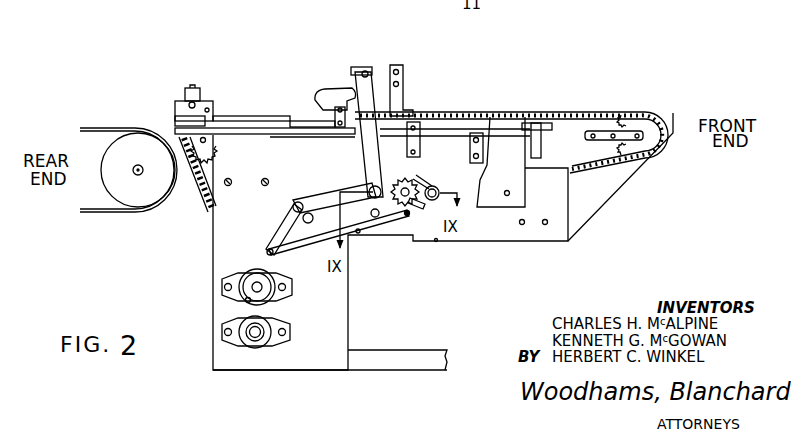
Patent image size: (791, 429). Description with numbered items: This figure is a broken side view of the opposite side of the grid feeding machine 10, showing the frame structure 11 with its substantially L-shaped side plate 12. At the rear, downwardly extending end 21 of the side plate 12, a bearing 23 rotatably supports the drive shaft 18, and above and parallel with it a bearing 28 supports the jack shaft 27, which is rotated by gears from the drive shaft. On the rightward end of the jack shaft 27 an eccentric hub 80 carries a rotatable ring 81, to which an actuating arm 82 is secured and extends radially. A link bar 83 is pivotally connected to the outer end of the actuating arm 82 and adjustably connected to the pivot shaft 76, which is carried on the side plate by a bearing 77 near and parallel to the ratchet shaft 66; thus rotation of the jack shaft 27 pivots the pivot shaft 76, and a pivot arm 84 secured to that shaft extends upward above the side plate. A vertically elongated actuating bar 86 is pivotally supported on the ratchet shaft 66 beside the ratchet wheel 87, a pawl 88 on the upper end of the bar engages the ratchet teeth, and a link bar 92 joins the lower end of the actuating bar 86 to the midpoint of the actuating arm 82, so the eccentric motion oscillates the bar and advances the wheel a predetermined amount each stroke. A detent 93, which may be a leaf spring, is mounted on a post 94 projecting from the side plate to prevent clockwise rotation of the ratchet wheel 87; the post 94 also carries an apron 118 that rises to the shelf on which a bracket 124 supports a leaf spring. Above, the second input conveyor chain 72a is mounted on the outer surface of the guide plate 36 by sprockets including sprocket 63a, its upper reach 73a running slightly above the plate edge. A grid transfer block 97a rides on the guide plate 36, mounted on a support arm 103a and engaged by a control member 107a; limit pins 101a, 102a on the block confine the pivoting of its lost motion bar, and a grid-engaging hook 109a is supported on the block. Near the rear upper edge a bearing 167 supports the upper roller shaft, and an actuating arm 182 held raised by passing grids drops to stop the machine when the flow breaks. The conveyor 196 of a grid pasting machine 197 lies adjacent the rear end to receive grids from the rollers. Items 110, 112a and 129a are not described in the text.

The grid feeding machine 10 is at (166, 268).
The frame structure 11 is at (335, 374).
The side plate 12 is at (390, 252).
The drive shaft 18 is at (258, 338).
The rearward downwardly extending end of side plate 21 is at (220, 308).
The bearing 23 is at (250, 343).
The jack shaft 27 is at (279, 292).
The bearing 28 is at (231, 284).
The guide plate 36 is at (620, 177).
The sprocket 63a is at (642, 145).
The ratchet shaft 66 is at (387, 222).
The second input conveyor chain 72a is at (619, 160).
The upper reach of chain 73a is at (584, 112).
The pivot shaft 76 is at (370, 187).
The bearing 77 is at (360, 233).
The eccentric hub 80 is at (259, 290).
The ring 81 is at (233, 298).
The actuating arm 82 is at (280, 233).
The link bar 83 is at (314, 196).
The pivot arm 84 is at (368, 158).
The actuating bar 86 is at (436, 242).
The ratchet wheel 87 is at (418, 205).
The pawl 88 is at (400, 172).
The link bar 92 is at (303, 242).
The detent 93 is at (421, 179).
The post 94 is at (436, 188).
The grid transfer block 97a is at (376, 78).
The limit pin 101a is at (382, 106).
The limit pin 102a is at (347, 116).
The support arm 103a is at (468, 120).
The control member 107a is at (427, 135).
The grid-engaging hook 109a is at (317, 103).
The feed direction 110 is at (351, 61).
The bracket 112a is at (316, 88).
The apron 118 is at (515, 178).
The bracket 124 is at (404, 73).
The sprocket 129a is at (216, 141).
The bearing 167 is at (205, 100).
The actuating arm 182 is at (173, 124).
The conveyor 196 is at (95, 126).
The grid pasting machine 197 is at (98, 232).